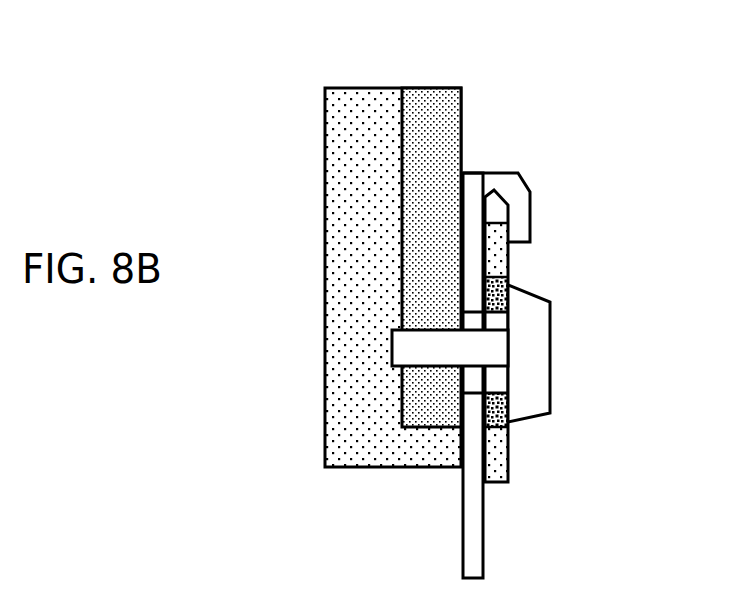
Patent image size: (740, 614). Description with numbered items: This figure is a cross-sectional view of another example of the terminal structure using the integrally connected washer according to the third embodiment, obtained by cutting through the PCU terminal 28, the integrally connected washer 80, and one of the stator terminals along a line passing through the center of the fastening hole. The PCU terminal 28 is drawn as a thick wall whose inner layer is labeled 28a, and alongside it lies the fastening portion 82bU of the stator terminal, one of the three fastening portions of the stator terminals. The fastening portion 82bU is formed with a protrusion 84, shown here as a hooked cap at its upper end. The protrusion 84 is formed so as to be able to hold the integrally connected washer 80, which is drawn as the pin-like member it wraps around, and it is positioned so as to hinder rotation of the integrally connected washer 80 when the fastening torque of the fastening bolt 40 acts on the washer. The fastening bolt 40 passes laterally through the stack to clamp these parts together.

The PCU terminal 28 is at (385, 67).
The inner layer of housing wall 28a is at (441, 148).
The fastening portion 82bU is at (473, 488).
The protrusion 84 is at (518, 219).
The integrally connected washer 80 is at (495, 268).
The fastening bolt 40 is at (533, 350).